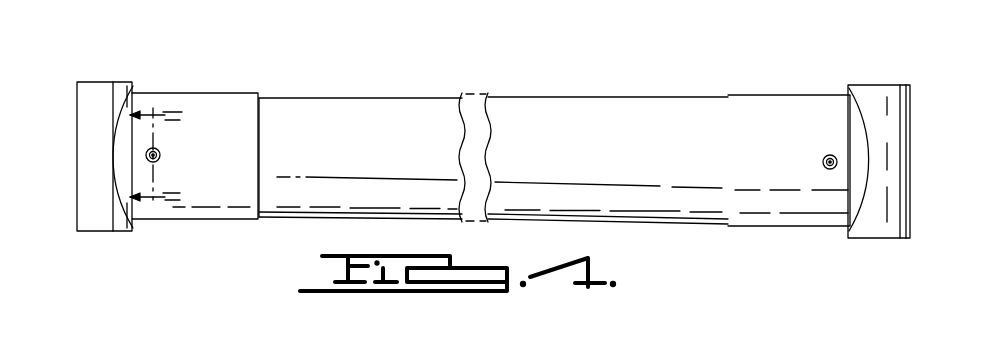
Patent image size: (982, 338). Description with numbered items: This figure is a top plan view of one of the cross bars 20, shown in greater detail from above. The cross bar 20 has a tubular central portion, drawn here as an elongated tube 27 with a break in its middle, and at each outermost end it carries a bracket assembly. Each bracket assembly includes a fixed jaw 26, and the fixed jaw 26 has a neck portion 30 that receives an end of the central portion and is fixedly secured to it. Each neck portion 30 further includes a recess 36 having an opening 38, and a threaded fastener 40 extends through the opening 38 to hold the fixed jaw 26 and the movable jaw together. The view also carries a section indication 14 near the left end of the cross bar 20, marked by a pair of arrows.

The cross bar 20 is at (597, 87).
The center axis / alignment dimension 14 is at (136, 112).
The fixed jaw 26 is at (107, 81).
The tube body 27 is at (397, 110).
The neck portion 30 is at (257, 97).
The recess 36 is at (160, 155).
The opening 38 is at (160, 158).
The threaded fastener 40 is at (160, 152).